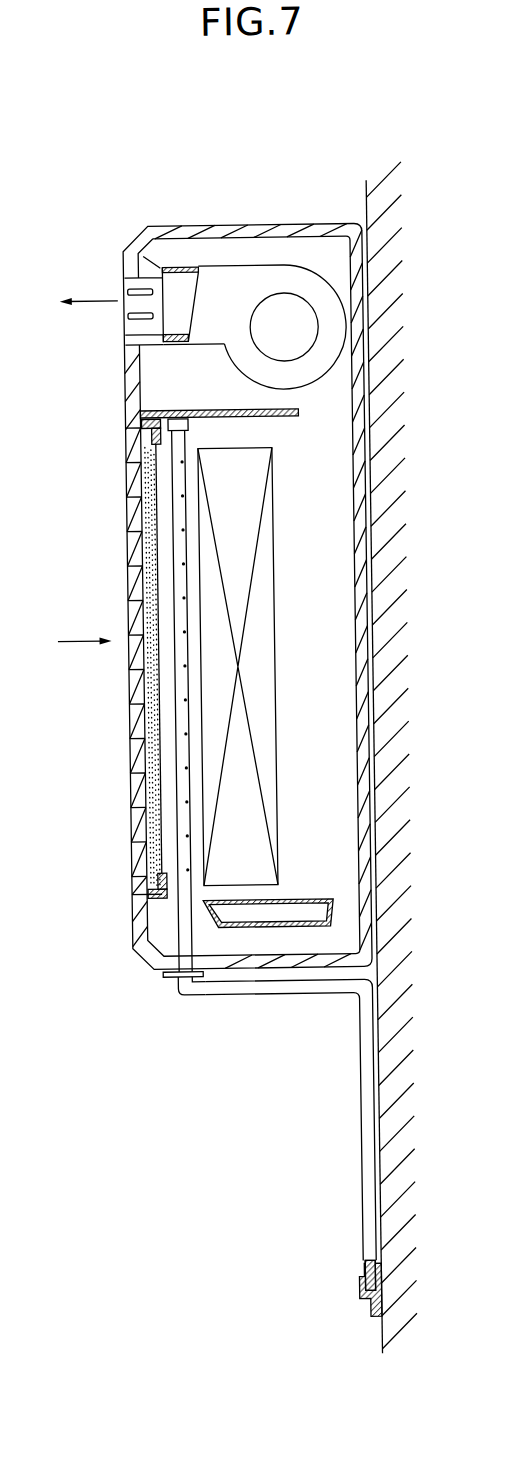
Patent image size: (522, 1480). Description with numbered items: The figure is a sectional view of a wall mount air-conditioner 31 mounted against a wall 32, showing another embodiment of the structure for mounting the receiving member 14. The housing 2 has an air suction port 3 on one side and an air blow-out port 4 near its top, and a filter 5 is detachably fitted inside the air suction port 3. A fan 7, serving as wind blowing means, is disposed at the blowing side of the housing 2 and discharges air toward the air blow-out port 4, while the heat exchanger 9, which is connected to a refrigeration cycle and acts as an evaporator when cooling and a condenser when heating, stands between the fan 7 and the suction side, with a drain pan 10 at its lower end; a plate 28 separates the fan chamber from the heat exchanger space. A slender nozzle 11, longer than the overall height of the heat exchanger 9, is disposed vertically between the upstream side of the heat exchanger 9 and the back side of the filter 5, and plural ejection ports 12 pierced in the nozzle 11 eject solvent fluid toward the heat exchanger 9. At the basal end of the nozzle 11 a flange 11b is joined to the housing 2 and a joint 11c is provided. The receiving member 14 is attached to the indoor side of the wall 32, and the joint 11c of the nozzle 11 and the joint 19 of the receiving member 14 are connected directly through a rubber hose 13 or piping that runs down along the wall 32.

The wall mount air-conditioner 31 is at (212, 590).
The wall 32 is at (370, 224).
The housing 2 is at (219, 226).
The fan 7 is at (302, 266).
The air blow-out port 4 is at (129, 328).
The partition plate 28 is at (290, 418).
The nozzle 11 is at (179, 516).
The ejection ports 12 is at (182, 629).
The heat exchanger 9 is at (274, 685).
The air suction port 3 is at (128, 742).
The filter 5 is at (145, 817).
The drain pan 10 is at (303, 901).
The flange 11b is at (167, 979).
The joint 11c is at (184, 997).
The rubber hose 13 is at (357, 1145).
The joint 19 is at (354, 1267).
The receiving member 14 is at (342, 1312).